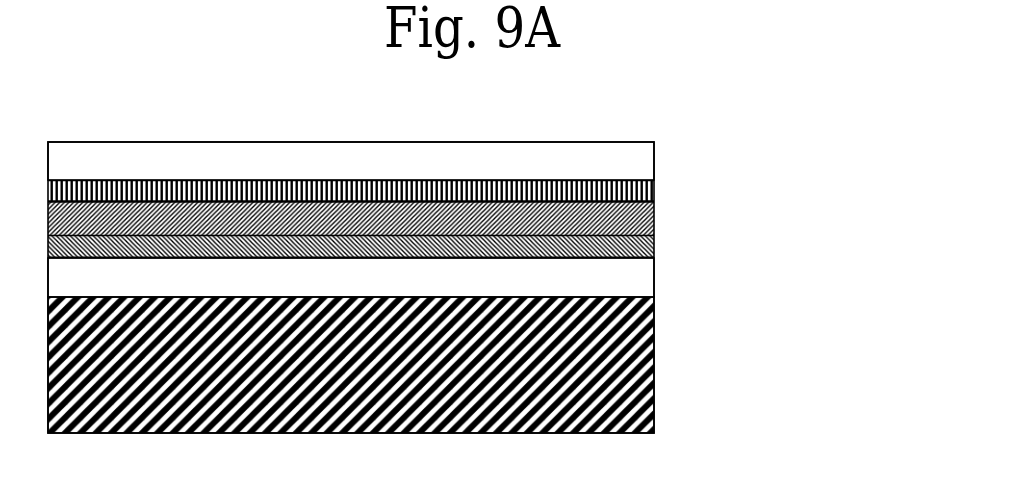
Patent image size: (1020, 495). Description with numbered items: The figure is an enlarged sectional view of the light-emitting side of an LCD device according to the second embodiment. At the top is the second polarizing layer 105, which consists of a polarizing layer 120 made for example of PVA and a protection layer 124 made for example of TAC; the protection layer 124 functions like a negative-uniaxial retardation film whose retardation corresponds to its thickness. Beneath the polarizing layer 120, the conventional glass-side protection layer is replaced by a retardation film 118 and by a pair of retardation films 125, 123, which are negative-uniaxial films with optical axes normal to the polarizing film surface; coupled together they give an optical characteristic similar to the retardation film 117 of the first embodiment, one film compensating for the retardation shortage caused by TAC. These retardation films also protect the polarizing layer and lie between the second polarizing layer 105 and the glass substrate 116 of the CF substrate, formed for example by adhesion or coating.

The second polarizing layer 105 is at (470, 168).
The protection layer 124 is at (654, 160).
The polarizing layer 120 is at (654, 190).
The retardation film 118 is at (654, 218).
The retardation film 117 is at (474, 279).
The retardation film 125 is at (654, 245).
The retardation film 123 is at (654, 277).
The glass substrate 116 is at (654, 363).